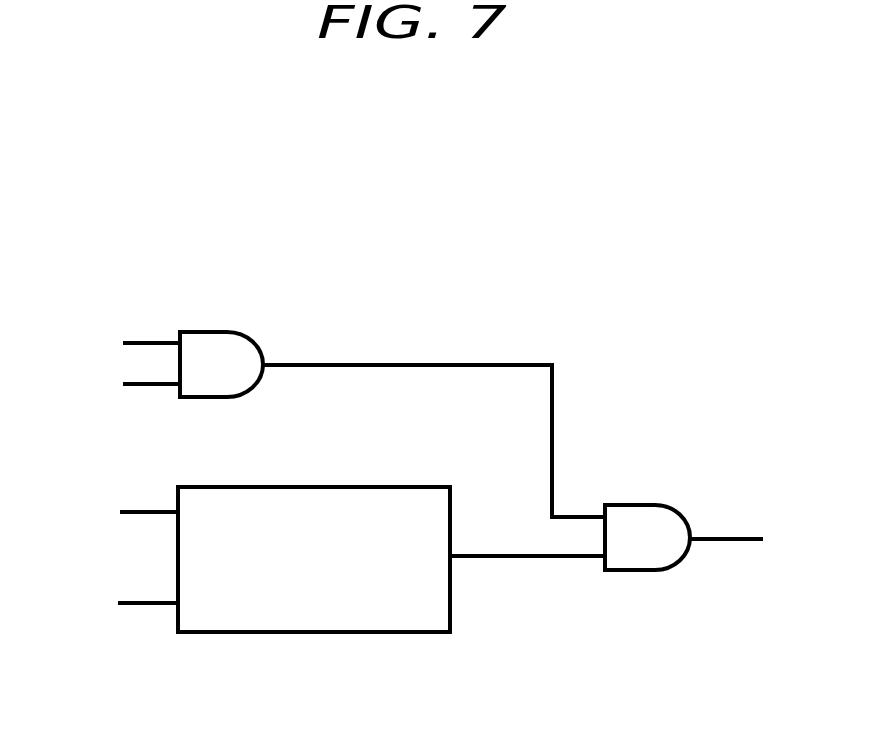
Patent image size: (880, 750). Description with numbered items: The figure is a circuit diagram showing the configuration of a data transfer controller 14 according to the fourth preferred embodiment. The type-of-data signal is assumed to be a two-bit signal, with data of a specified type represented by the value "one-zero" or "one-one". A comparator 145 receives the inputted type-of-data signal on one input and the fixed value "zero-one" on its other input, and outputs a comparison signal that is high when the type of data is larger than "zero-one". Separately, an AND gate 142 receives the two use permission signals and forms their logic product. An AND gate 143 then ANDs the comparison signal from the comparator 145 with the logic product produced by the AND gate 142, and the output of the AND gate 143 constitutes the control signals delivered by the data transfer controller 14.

The data transfer controller 14 is at (75, 224).
The AND gate 142 is at (217, 348).
The AND gate 143 is at (655, 522).
The comparator 145 is at (338, 635).